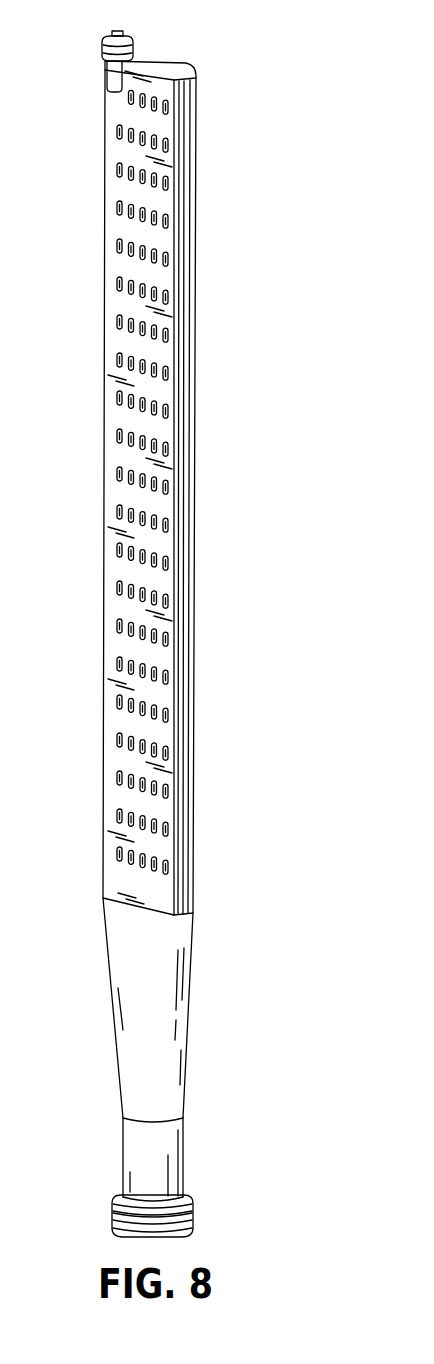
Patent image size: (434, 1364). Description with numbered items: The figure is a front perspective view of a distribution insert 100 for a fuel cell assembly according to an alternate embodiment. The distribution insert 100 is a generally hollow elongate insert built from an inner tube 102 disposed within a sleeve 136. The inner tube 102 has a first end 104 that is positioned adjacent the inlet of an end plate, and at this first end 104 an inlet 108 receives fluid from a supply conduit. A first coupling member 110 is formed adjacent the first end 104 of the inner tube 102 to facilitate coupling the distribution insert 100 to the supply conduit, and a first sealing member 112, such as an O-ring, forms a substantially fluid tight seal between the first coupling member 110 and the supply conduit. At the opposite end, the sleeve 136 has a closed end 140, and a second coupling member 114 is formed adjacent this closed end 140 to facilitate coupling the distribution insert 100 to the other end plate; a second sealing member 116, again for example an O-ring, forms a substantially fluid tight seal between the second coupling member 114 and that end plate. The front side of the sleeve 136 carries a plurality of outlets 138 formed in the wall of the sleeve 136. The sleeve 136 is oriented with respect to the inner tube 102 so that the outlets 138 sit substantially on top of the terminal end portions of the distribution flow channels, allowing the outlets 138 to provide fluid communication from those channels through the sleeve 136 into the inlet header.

The distribution insert 100 is at (203, 53).
The inner tube 102 is at (189, 982).
The first end 104 is at (184, 1153).
The inlet 108 is at (148, 1238).
The first coupling member 110 is at (194, 1196).
The first sealing member 112 is at (194, 1214).
The second coupling member 114 is at (110, 33).
The second sealing member 116 is at (103, 46).
The sleeve 136 is at (197, 158).
The outlets 138 is at (117, 279).
The closed end 140 is at (157, 62).